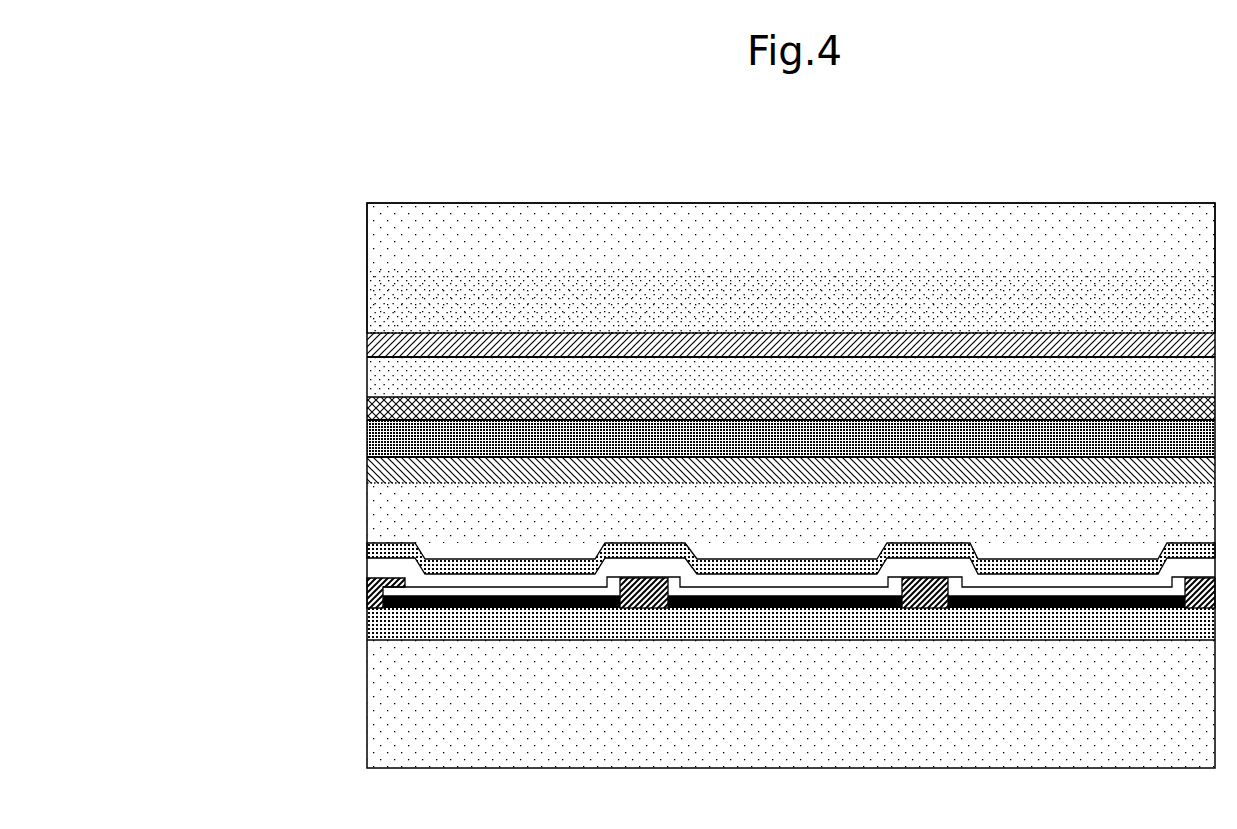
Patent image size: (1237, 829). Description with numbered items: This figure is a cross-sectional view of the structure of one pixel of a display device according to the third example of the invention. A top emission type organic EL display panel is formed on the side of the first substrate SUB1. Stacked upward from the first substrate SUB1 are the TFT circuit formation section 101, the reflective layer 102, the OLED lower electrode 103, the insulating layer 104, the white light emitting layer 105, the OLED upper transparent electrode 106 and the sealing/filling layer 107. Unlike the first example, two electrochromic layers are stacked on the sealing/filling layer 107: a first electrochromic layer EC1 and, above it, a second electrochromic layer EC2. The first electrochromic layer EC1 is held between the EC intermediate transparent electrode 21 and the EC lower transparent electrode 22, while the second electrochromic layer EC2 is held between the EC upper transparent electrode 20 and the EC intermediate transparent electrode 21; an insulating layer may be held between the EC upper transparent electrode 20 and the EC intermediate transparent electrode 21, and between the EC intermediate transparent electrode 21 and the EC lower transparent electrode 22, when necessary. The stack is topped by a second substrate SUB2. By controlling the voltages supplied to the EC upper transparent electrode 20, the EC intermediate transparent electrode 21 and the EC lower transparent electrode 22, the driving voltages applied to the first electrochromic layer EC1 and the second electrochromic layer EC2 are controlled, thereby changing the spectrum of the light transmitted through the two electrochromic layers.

The second substrate SUB2 is at (400, 310).
The second electrochromic layer EC2 is at (398, 382).
The first electrochromic layer EC1 is at (398, 440).
The sealing/filling layer 107 is at (417, 513).
The OLED upper transparent electrode 106 is at (423, 570).
The white light emitting layer 105 is at (417, 580).
The insulating layer 104 is at (368, 598).
The OLED lower electrode 103 is at (375, 623).
The reflective layer 102 is at (465, 612).
The TFT circuit formation section 101 is at (542, 623).
The first substrate SUB1 is at (392, 750).
The EC upper transparent electrode 20 is at (470, 350).
The EC intermediate transparent electrode 21 is at (553, 412).
The EC lower transparent electrode 22 is at (702, 477).